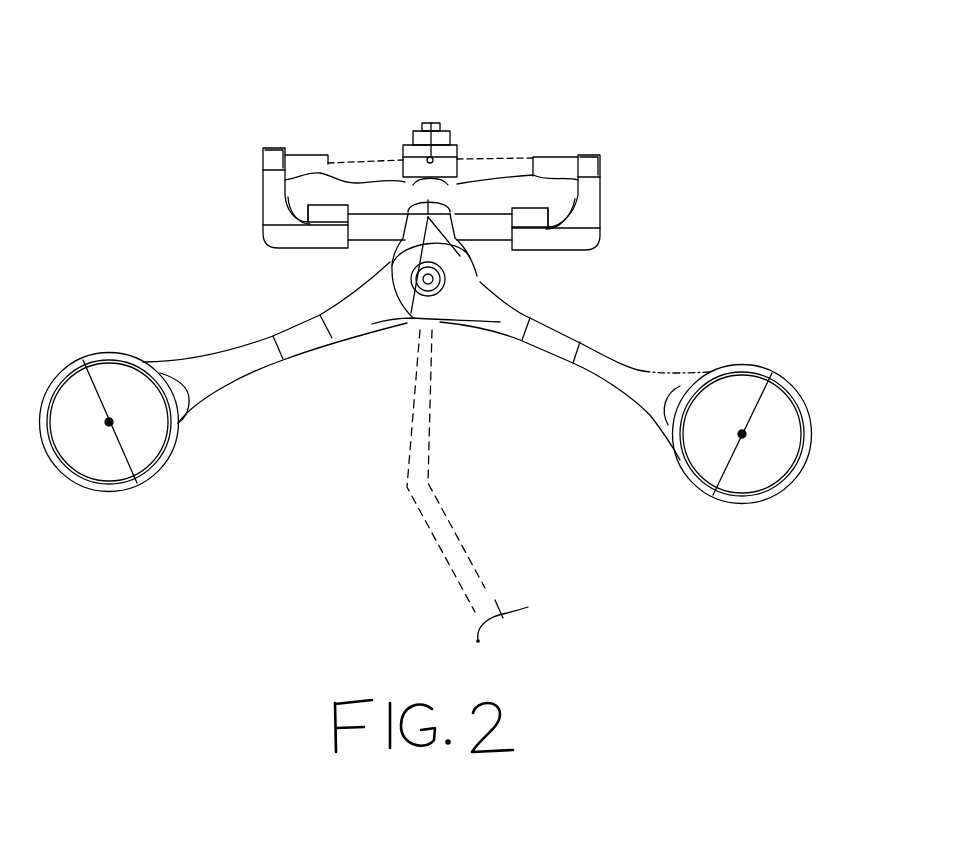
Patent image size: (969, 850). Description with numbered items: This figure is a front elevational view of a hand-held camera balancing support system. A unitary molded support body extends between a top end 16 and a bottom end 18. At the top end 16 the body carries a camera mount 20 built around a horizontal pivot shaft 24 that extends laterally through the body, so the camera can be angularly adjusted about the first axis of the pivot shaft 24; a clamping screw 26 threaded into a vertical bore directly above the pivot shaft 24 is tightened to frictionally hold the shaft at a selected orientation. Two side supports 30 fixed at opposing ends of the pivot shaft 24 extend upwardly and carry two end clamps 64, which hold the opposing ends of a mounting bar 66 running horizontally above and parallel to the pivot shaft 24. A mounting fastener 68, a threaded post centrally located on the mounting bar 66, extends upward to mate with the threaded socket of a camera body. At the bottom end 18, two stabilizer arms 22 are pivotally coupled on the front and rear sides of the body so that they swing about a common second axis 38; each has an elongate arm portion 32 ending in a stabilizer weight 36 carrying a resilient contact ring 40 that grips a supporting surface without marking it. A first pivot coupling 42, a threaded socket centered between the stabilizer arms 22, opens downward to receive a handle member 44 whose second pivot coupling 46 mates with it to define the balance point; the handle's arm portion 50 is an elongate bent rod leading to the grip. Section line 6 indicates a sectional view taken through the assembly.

The section line 6 is at (398, 67).
The top end 16 is at (408, 210).
The bottom end 18 is at (390, 301).
The camera mount 20 is at (668, 172).
The stabilizer arms 22 is at (167, 314).
The horizontal pivot shaft 24 is at (485, 225).
The clamping screw 26 is at (443, 212).
The side supports 30 is at (270, 228).
The elongate arm portion 32 is at (233, 370).
The stabilizer weight 36 is at (780, 420).
The second axis 38 is at (447, 281).
The contact ring 40 is at (127, 490).
The first pivot coupling 42 is at (417, 322).
The handle member 44 is at (489, 541).
The second pivot coupling 46 is at (432, 350).
The arm portion 50 is at (428, 536).
The end clamps 64 is at (267, 146).
The mounting bar 66 is at (362, 155).
The mounting fastener 68 is at (433, 122).